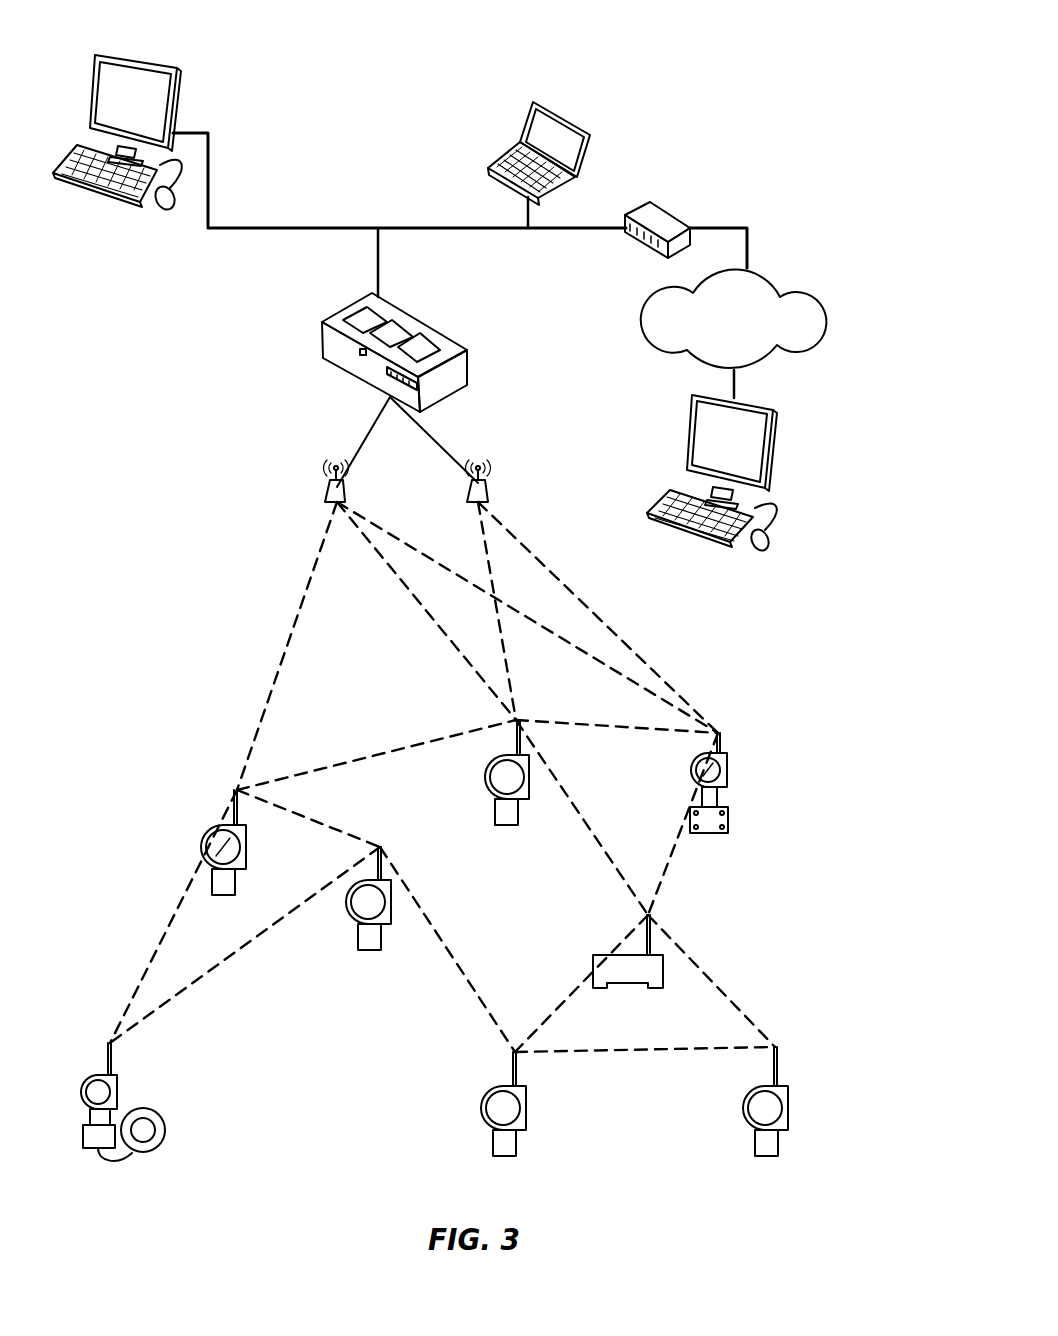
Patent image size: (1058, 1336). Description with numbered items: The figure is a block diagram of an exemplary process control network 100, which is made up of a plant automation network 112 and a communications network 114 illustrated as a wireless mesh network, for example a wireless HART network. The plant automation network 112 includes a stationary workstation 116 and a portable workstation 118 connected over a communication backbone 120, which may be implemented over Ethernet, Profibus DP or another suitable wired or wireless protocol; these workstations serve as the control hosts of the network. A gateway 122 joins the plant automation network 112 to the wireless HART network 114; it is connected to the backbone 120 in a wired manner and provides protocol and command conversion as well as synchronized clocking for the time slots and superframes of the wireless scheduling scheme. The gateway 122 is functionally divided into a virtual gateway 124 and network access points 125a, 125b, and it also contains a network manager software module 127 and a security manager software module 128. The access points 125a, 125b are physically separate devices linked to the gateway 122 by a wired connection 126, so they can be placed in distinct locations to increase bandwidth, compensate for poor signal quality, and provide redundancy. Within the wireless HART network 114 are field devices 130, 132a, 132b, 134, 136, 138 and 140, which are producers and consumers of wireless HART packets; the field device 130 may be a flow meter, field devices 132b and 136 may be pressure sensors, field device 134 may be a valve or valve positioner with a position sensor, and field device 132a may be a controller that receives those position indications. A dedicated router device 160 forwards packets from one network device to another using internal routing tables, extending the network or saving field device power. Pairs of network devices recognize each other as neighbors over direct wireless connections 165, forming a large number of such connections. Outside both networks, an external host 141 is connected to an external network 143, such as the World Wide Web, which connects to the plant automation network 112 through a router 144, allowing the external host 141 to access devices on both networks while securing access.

The process control network 100 is at (384, 58).
The plant automation network 112 is at (504, 256).
The communications network 114 is at (250, 405).
The stationary workstation 116 is at (178, 83).
The portable workstation 118 is at (528, 112).
The communication backbone 120 is at (313, 227).
The gateway 122 is at (468, 368).
The virtual gateway 124 is at (423, 347).
The network manager software module 127 is at (398, 335).
The security manager software module 128 is at (370, 322).
The network access point 125a is at (323, 490).
The network access point 125b is at (485, 488).
The wired connection 126 is at (440, 445).
The field device 130 is at (167, 1130).
The field device 132a is at (352, 920).
The field device 132b is at (487, 788).
The field device 134 is at (480, 1108).
The field device 136 is at (730, 815).
The field device 138 is at (208, 862).
The field device 140 is at (743, 1108).
The external host 141 is at (772, 443).
The external network 143 is at (657, 307).
The router 144 is at (673, 208).
The router device 160 is at (637, 988).
The direct wireless connection 165 is at (290, 637).